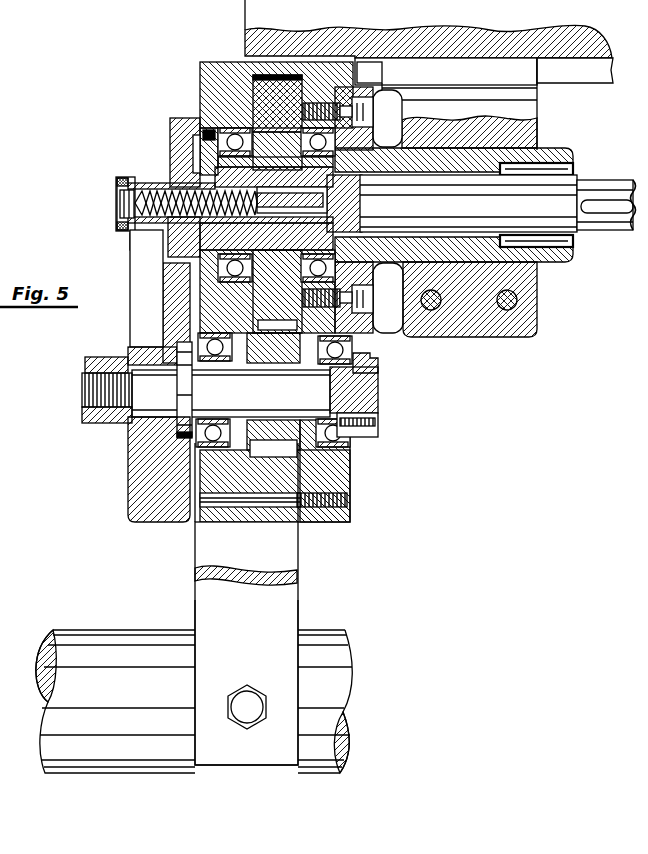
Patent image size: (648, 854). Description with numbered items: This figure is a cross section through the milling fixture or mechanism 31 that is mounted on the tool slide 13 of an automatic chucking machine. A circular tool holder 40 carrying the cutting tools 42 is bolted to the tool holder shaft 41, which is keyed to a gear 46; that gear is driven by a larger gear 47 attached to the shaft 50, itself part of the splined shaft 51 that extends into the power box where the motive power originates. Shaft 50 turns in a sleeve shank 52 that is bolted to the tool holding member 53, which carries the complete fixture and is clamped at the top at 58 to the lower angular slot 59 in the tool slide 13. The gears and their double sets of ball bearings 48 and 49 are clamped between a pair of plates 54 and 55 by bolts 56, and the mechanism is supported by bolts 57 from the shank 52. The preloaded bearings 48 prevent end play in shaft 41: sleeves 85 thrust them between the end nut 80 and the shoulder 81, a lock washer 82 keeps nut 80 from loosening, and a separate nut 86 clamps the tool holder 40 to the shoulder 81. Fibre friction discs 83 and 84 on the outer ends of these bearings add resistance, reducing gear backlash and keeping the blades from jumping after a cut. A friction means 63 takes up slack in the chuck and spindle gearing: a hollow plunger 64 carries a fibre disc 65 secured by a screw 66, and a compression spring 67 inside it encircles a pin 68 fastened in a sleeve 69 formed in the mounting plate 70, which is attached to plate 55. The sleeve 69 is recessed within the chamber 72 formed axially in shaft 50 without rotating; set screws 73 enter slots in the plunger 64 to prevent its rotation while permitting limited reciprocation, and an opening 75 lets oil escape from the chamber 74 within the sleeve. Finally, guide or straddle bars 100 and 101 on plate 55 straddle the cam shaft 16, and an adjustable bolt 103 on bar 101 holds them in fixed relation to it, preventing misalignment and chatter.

The tool slide 13 is at (262, 33).
The shaft 16 is at (103, 650).
The mechanism 31 is at (64, 474).
The circular tool holder 40 is at (135, 504).
The tool holder shaft 41 is at (380, 393).
The cutting tools 42 is at (143, 302).
The gear 46 is at (277, 437).
The gear 47 is at (267, 102).
The ball bearings 48 is at (353, 443).
The ball bearings 49 is at (326, 120).
The shaft 50 is at (503, 200).
The splined shaft 51 is at (611, 210).
The sleeve shank 52 is at (410, 140).
The tool holding member 53 is at (524, 318).
The plate 54 is at (347, 62).
The plate 55 is at (213, 62).
The bolts 56 is at (348, 504).
The bolts 57 is at (379, 90).
The clamp 58 is at (516, 70).
The lower angular slot 59 is at (568, 72).
The friction means 63 is at (97, 193).
The plunger 64 is at (163, 187).
The fibre disc 65 is at (122, 178).
The screw 66 is at (117, 212).
The compression spring 67 is at (134, 200).
The pin 68 is at (340, 204).
The sleeve 69 is at (289, 167).
The mounting plate 70 is at (200, 130).
The chamber 72 is at (340, 196).
The set screws 73 is at (200, 140).
The chamber 74 is at (279, 255).
The opening 75 is at (367, 122).
The end nut 80 is at (378, 418).
The shoulder 81 is at (285, 388).
The lock washer 82 is at (378, 358).
The fibre friction disc 83 is at (357, 342).
The fibre friction disc 84 is at (160, 333).
The sleeves 85 is at (328, 390).
The nut 86 is at (85, 363).
The guide bar 100 is at (213, 558).
The guide bar 101 is at (215, 623).
The adjustable bolt 103 is at (233, 708).